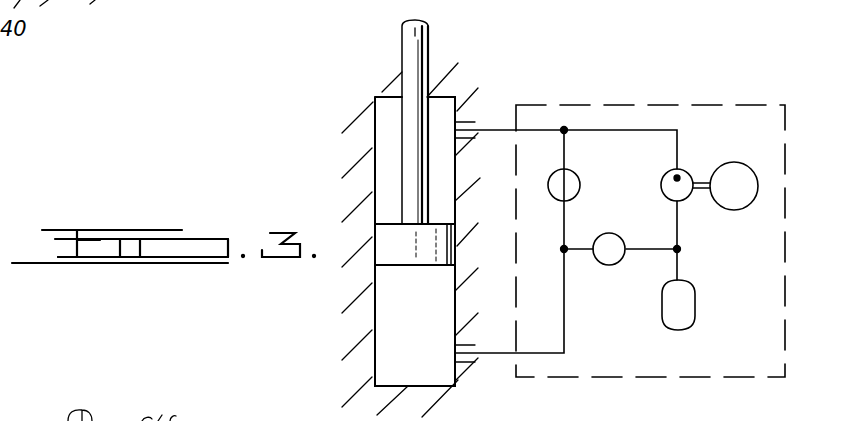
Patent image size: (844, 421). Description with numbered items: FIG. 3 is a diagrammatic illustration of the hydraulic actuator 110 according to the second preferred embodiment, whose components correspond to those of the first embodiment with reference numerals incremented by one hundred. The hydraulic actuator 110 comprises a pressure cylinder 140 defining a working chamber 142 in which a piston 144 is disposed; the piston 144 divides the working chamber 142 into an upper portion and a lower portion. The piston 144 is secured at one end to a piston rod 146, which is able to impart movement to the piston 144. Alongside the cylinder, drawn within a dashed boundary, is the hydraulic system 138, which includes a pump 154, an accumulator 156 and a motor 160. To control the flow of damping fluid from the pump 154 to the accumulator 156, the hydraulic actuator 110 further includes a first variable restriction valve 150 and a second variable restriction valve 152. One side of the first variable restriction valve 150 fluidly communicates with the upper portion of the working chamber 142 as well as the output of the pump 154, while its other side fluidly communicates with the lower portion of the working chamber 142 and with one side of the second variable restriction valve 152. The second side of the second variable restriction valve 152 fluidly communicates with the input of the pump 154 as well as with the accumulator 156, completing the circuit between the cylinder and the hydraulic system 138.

The hydraulic actuator 110 is at (583, 62).
The hydraulic system 138 is at (672, 103).
The pressure cylinder 140 is at (440, 377).
The working chamber 142 is at (383, 163).
The piston 144 is at (384, 246).
The piston rod 146 is at (420, 48).
The first variable restriction valve 150 is at (577, 191).
The second variable restriction valve 152 is at (608, 265).
The pump 154 is at (666, 178).
The accumulator 156 is at (688, 302).
The motor 160 is at (735, 162).